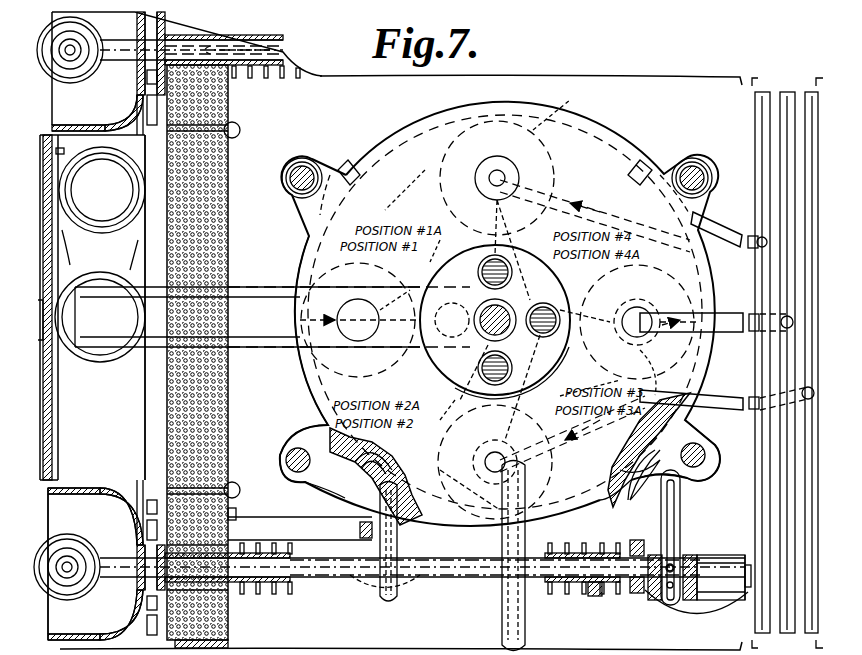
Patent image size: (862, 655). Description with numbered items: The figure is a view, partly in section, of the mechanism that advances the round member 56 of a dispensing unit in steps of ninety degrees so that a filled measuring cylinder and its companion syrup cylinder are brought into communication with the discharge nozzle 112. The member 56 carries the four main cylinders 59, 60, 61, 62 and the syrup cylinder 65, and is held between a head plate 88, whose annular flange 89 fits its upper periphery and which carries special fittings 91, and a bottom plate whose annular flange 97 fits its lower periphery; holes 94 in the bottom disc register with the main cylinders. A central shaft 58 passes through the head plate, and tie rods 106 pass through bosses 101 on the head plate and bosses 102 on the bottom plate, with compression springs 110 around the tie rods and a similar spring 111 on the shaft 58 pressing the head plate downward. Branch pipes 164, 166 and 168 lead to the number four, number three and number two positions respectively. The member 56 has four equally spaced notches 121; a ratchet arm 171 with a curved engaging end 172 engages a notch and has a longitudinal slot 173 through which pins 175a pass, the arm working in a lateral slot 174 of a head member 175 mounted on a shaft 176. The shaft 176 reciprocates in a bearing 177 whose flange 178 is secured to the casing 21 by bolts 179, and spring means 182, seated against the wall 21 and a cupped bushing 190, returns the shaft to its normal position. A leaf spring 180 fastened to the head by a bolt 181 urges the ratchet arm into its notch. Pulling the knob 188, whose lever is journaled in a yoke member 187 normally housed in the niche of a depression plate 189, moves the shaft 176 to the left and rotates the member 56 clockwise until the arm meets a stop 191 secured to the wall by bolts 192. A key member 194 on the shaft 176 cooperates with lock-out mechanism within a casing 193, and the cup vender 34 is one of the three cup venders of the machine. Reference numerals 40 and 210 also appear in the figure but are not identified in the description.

The insulated compartment 21 is at (167, 435).
The cup vender 34 is at (92, 233).
The side frame plate 40 is at (48, 420).
The round member 56 is at (292, 243).
The shaft 58 is at (478, 362).
The main cylinder 59 is at (332, 372).
The main cylinder 60 is at (442, 482).
The main cylinder 61 is at (604, 364).
The main cylinder 62 is at (440, 168).
The syrup cylinder 65 is at (480, 268).
The head plate 88 is at (405, 145).
The annular flange 89 is at (578, 112).
The special fittings 91 is at (490, 256).
The holes 94 is at (497, 165).
The annular flange 97 is at (612, 510).
The bosses 101 is at (288, 192).
The bosses 102 is at (293, 444).
The tie rods 106 is at (302, 166).
The compression springs 110 is at (288, 170).
The compression spring 111 is at (540, 302).
The discharge nozzle 112 is at (140, 335).
The notches 121 is at (347, 165).
The branch pipes 164 is at (705, 222).
The branch pipes 166 is at (645, 305).
The branch pipes 168 is at (700, 403).
The ratchet arm 171 is at (682, 518).
The curved engaging end 172 is at (655, 478).
The longitudinal slot 173 is at (662, 540).
The lateral slot 174 is at (686, 560).
The head member 175 is at (724, 577).
The pins 175a is at (668, 595).
The shaft 176 is at (238, 46).
The bearing 177 is at (200, 42).
The flange 178 is at (147, 74).
The bolts 179 is at (145, 92).
The leaf spring 180 is at (692, 610).
The bolt 181 is at (745, 600).
The spring means 182 is at (262, 78).
The yoke member 187 is at (124, 40).
The knob 188 is at (76, 68).
The depression plate 189 is at (70, 488).
The cupped bushing 190 is at (632, 590).
The stop 191 is at (378, 492).
The bolts 192 is at (236, 516).
The casing 193 is at (145, 405).
The key member 194 is at (270, 52).
The tab 210 is at (62, 152).